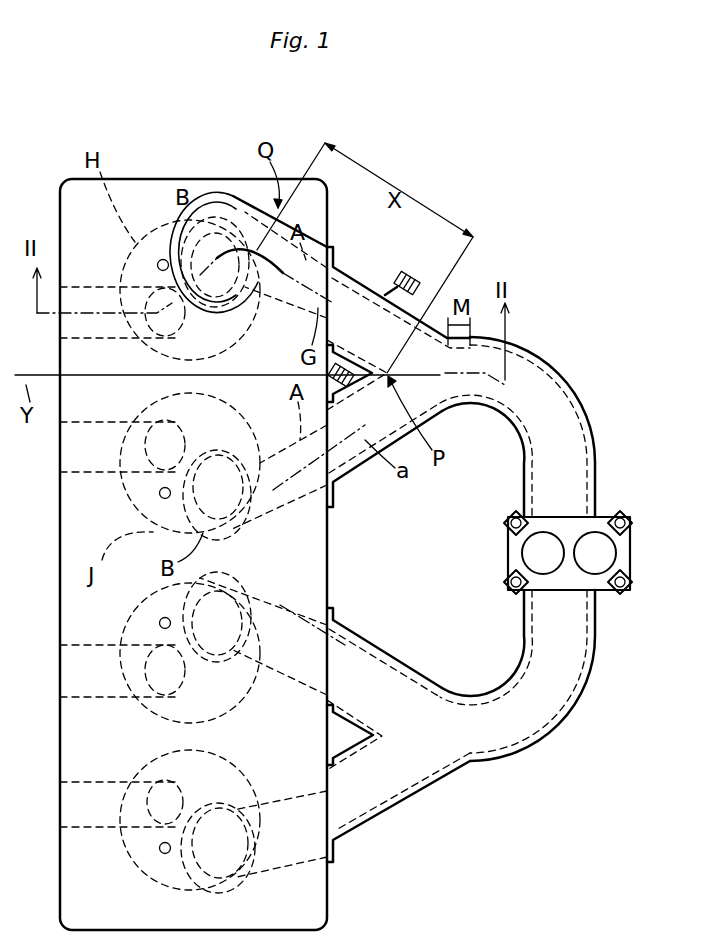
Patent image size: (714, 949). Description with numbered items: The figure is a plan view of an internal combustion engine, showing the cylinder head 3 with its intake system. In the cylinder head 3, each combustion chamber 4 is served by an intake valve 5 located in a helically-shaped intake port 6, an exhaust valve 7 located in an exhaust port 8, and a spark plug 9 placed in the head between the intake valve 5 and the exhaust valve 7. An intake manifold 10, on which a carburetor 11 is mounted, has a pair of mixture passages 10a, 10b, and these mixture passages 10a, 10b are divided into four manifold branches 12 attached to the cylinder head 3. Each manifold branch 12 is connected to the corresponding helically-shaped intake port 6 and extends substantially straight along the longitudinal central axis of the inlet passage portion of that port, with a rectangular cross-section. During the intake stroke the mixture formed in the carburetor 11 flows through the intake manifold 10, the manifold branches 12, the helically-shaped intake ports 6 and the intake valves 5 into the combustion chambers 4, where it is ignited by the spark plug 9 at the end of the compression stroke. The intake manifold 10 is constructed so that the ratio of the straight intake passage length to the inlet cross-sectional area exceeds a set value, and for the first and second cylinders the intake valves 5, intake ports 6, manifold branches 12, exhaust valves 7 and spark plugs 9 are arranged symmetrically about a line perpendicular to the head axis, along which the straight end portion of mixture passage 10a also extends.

The cylinder head 3 is at (327, 197).
The combustion chamber 4 is at (153, 232).
The intake valve 5 is at (243, 305).
The helically-shaped intake port 6 is at (265, 222).
The exhaust valve 7 is at (158, 335).
The exhaust port 8 is at (98, 342).
The spark plug 9 is at (157, 265).
The intake manifold 10 is at (573, 405).
The mixture passage 10a is at (480, 405).
The mixture passage 10b is at (490, 695).
The carburetor 11 is at (632, 545).
The manifold branch 12 is at (346, 274).